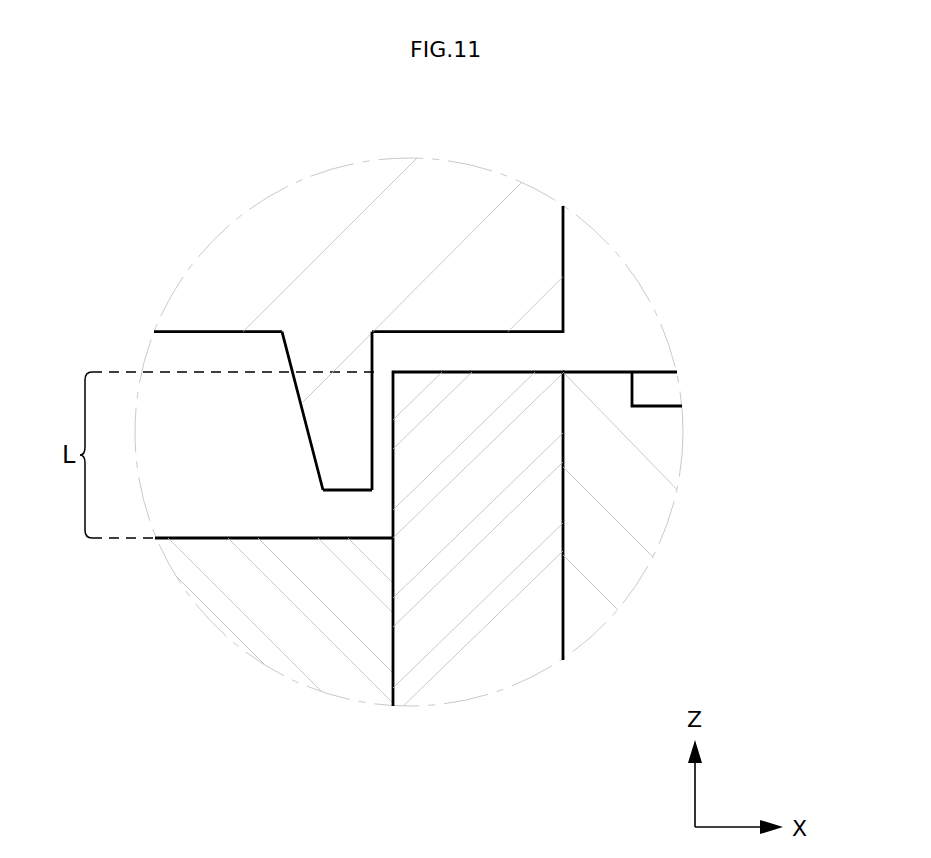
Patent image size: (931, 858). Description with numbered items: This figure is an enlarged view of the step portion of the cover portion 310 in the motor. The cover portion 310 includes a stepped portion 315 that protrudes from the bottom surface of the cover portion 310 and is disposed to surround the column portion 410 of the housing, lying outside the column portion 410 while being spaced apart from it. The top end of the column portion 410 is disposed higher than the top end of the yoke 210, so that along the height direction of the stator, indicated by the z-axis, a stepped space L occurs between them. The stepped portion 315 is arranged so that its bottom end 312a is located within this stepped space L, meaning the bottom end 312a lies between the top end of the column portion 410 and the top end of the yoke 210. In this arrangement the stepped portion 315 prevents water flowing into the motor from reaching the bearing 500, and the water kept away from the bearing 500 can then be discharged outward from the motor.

The yoke 210 is at (258, 600).
The cover portion 310 is at (327, 357).
The bottom end 312a is at (347, 490).
The stepped portion 315 is at (327, 411).
The column portion 410 is at (483, 656).
The bearing 500 is at (642, 519).